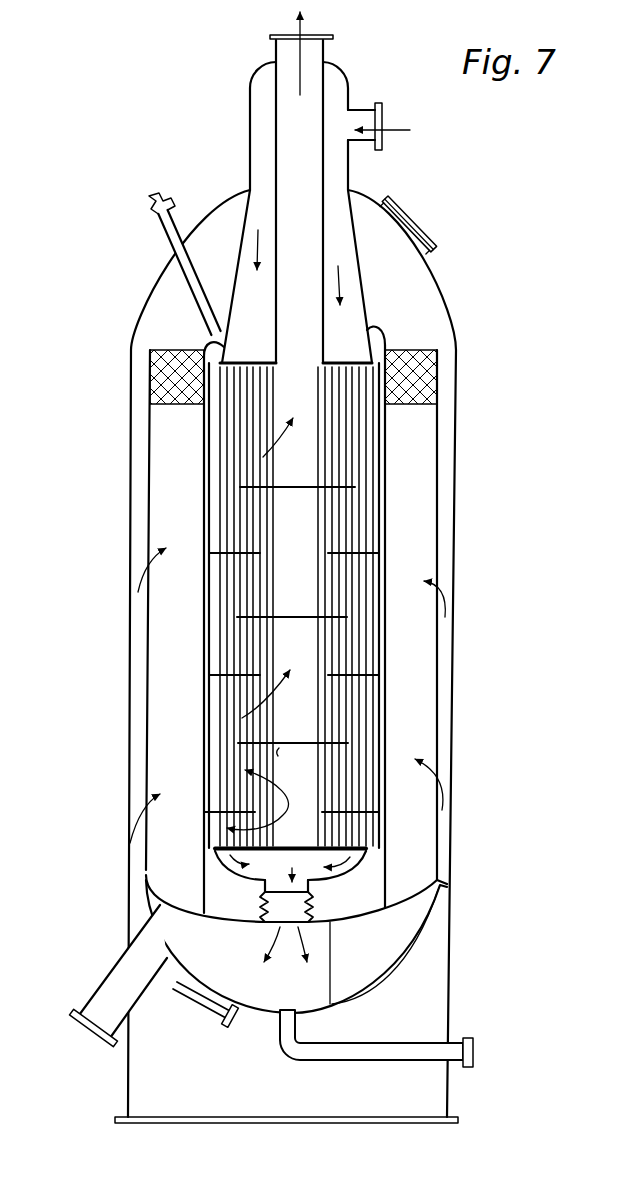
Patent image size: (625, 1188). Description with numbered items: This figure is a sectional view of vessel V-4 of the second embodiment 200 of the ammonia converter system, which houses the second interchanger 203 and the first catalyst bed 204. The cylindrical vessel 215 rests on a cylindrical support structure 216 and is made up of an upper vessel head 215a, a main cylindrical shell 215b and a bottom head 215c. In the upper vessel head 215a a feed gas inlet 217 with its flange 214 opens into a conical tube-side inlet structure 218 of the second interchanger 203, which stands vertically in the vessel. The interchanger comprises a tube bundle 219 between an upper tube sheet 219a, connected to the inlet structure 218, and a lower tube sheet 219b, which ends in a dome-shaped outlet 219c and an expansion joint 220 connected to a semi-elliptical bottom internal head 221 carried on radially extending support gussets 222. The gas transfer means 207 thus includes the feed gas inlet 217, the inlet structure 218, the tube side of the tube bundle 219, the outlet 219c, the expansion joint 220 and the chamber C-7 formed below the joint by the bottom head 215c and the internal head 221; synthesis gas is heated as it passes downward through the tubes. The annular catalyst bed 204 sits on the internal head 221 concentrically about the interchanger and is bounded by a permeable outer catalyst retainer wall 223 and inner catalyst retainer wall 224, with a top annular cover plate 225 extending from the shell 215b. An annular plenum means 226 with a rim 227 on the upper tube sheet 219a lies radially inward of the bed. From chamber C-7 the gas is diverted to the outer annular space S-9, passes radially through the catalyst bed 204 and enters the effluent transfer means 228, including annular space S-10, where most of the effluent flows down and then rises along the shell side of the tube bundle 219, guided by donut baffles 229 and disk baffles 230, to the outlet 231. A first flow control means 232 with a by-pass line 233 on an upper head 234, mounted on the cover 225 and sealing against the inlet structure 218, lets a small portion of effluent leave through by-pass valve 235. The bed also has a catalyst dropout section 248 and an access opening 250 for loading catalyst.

The second embodiment of ammonia converter system 200 is at (470, 201).
The second interchanger 203 is at (219, 654).
The first catalyst bed 204 is at (149, 633).
The gas transfer means 207 is at (340, 228).
The flange 214 is at (385, 117).
The cylindrical vessel 215 is at (457, 517).
The upper vessel head 215a is at (160, 270).
The main cylindrical shell 215b is at (131, 503).
The bottom head 215c is at (140, 913).
The cylindrical support structure 216 is at (448, 986).
The feed gas inlet 217 is at (365, 108).
The conical tube-side inlet structure 218 is at (362, 280).
The tube bundle 219 is at (380, 503).
The upper tube sheet 219a is at (253, 357).
The lower tube sheet 219b is at (373, 847).
The dome-shaped outlet 219c is at (358, 868).
The expansion joint 220 is at (262, 903).
The bottom internal head 221 is at (207, 912).
The support gussets 222 is at (385, 958).
The outer cylindrical catalyst retainer wall 223 is at (148, 438).
The inner cylindrical catalyst retainer wall 224 is at (197, 733).
The top annular plate or cover means 225 is at (410, 348).
The annular plenum means 226 is at (380, 695).
The rim 227 is at (385, 320).
The first catalyst bed effluent transfer means 228 is at (201, 706).
The donut baffles 229 is at (322, 545).
The disk baffles 230 is at (269, 624).
The outlet 231 is at (276, 53).
The first flow control means 232 is at (192, 303).
The by-pass line 233 is at (190, 298).
The upper head 234 is at (215, 328).
The by-pass valve 235 is at (172, 205).
The catalyst dropout section 248 is at (98, 992).
The access opening 250 is at (417, 209).
The vessel V-4 is at (441, 261).
The outer annular space S-9 is at (445, 657).
The annular space S-10 is at (380, 542).
The chamber C-7 is at (309, 973).